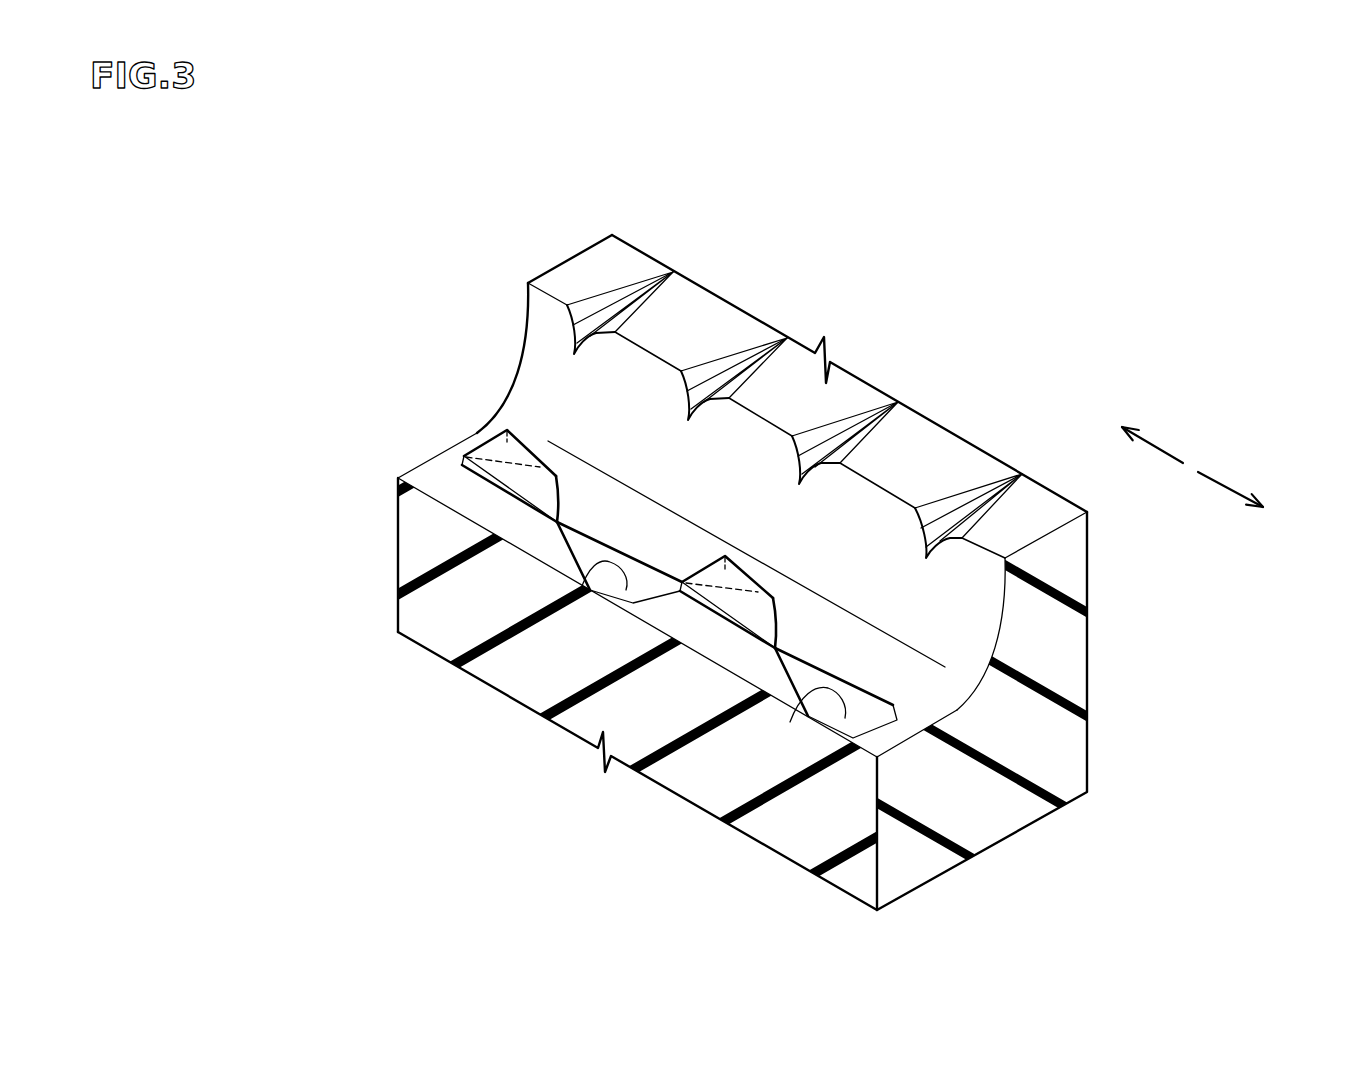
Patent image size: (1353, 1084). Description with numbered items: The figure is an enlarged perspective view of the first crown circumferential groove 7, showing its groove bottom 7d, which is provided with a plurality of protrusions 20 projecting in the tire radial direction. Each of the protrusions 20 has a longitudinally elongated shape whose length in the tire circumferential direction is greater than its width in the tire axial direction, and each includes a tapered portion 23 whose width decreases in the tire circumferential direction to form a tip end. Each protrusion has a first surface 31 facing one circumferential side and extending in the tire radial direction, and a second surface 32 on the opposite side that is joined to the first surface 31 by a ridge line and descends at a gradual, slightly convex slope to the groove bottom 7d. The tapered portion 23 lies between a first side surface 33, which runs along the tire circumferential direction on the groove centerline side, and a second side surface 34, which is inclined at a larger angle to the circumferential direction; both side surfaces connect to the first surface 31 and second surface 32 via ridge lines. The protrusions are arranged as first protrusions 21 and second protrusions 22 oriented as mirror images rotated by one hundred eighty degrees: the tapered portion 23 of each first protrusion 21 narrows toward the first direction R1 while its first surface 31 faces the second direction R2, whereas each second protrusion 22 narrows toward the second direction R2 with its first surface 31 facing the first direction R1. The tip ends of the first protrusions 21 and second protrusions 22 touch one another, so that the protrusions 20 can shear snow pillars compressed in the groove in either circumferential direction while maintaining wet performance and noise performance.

The first crown circumferential groove 7 is at (445, 345).
The groove bottom 7d is at (433, 483).
The protrusions 20 is at (723, 132).
The first protrusions 21 is at (507, 462).
The second protrusions 22 is at (862, 703).
The tapered portion 23 is at (538, 490).
The first surface 31 is at (657, 603).
The second surface 32 is at (837, 700).
The first side surface 33 is at (492, 475).
The second side surface 34 is at (572, 649).
The first direction R1 is at (1260, 505).
The second direction R2 is at (1130, 430).